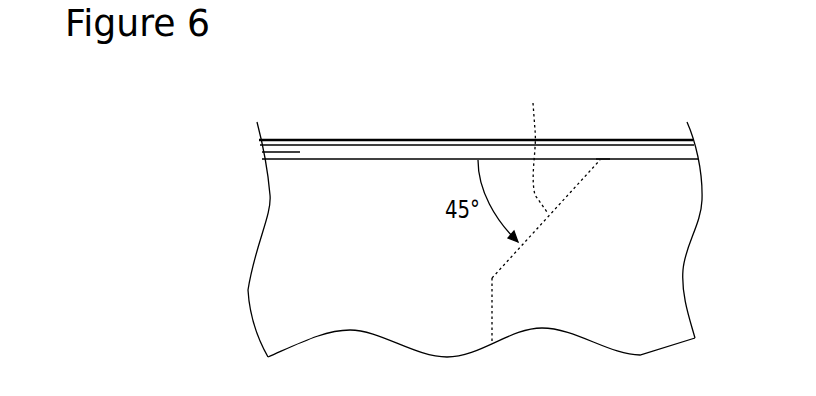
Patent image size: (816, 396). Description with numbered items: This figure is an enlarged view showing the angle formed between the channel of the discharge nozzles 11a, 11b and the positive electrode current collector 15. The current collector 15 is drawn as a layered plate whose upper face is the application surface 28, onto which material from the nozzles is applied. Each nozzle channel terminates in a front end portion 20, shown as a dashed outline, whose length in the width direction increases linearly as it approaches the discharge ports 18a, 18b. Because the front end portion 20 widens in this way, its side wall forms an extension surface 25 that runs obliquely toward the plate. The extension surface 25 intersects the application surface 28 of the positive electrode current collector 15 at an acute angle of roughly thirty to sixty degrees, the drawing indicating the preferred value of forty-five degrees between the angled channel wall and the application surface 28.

The positive electrode current collector 15 is at (285, 138).
The discharge nozzle 11a is at (479, 94).
The discharge nozzle 11b is at (378, 158).
The discharge port 18a is at (559, 188).
The discharge port 18b is at (602, 160).
The front end portion of the channel 20 is at (534, 144).
The extension surface 25 is at (605, 153).
The application surface 28 is at (332, 147).